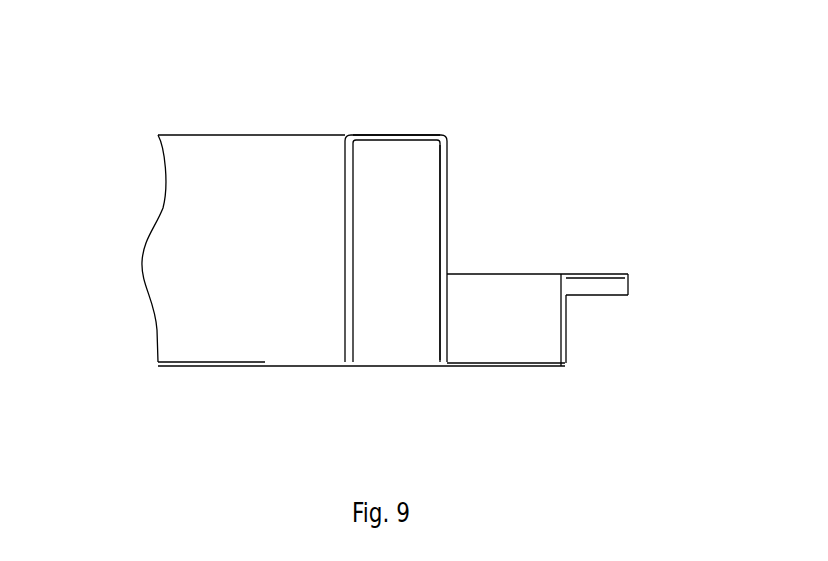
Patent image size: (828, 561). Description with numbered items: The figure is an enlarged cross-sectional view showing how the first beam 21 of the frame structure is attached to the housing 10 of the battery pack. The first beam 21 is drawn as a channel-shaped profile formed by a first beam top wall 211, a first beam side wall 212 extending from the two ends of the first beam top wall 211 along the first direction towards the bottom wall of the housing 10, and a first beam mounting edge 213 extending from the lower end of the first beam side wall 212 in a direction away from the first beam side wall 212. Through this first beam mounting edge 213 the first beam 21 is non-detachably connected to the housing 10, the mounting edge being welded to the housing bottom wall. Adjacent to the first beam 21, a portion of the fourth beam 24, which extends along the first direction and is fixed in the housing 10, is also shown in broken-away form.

The housing 10 is at (540, 367).
The first beam 21 is at (344, 150).
The fourth beam 24 is at (232, 153).
The first beam top wall 211 is at (402, 132).
The first beam side wall 212 is at (447, 252).
The first beam mounting edge 213 is at (325, 368).